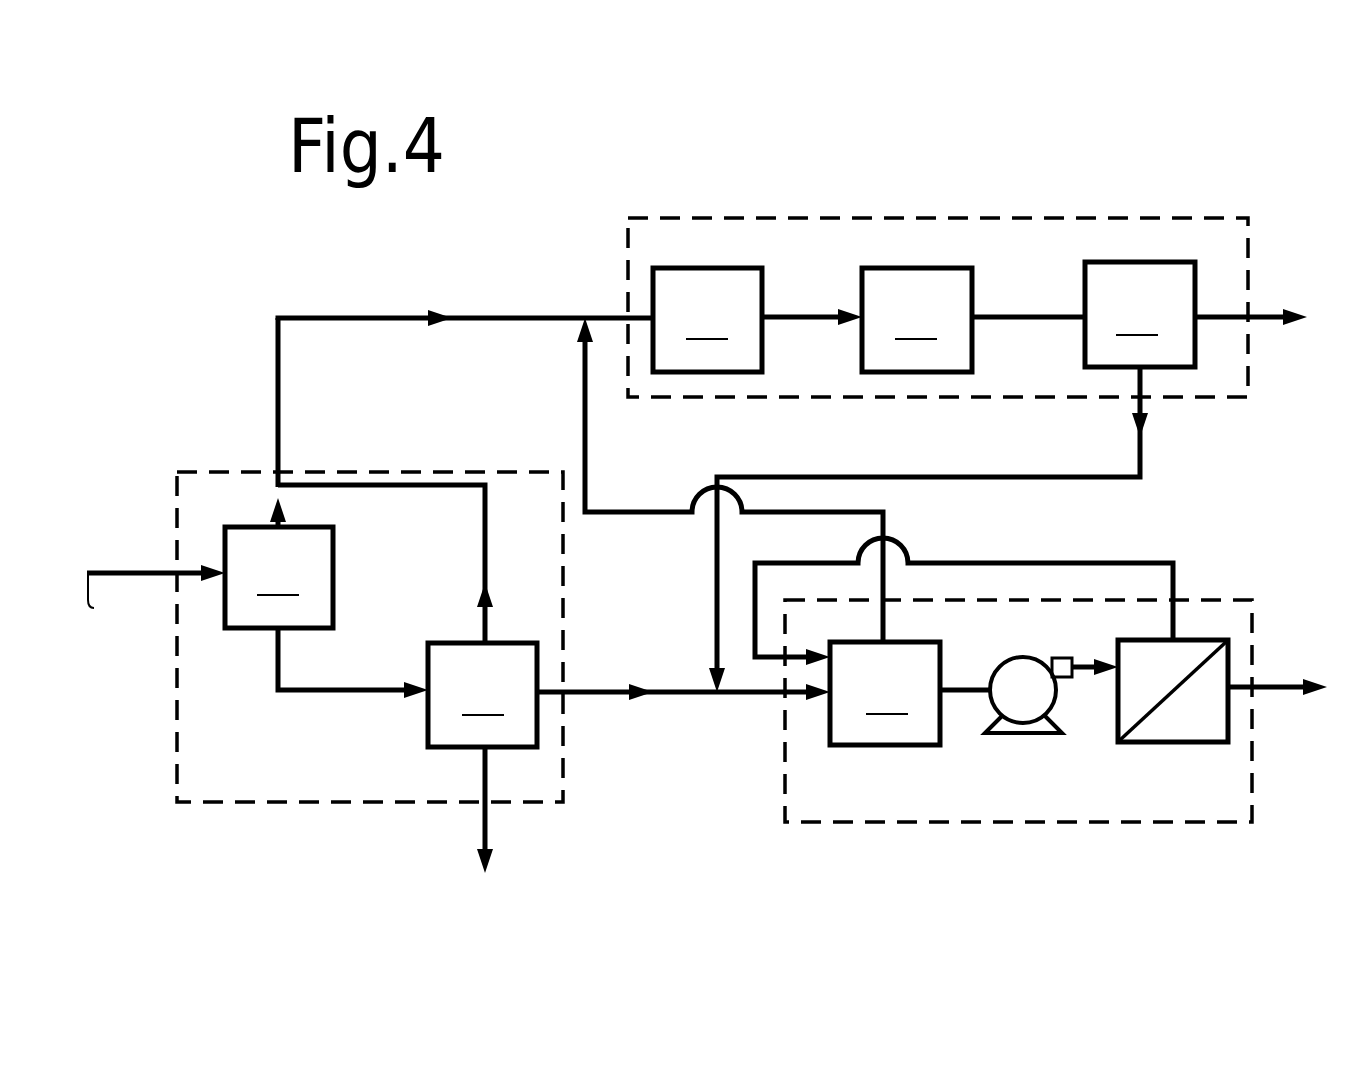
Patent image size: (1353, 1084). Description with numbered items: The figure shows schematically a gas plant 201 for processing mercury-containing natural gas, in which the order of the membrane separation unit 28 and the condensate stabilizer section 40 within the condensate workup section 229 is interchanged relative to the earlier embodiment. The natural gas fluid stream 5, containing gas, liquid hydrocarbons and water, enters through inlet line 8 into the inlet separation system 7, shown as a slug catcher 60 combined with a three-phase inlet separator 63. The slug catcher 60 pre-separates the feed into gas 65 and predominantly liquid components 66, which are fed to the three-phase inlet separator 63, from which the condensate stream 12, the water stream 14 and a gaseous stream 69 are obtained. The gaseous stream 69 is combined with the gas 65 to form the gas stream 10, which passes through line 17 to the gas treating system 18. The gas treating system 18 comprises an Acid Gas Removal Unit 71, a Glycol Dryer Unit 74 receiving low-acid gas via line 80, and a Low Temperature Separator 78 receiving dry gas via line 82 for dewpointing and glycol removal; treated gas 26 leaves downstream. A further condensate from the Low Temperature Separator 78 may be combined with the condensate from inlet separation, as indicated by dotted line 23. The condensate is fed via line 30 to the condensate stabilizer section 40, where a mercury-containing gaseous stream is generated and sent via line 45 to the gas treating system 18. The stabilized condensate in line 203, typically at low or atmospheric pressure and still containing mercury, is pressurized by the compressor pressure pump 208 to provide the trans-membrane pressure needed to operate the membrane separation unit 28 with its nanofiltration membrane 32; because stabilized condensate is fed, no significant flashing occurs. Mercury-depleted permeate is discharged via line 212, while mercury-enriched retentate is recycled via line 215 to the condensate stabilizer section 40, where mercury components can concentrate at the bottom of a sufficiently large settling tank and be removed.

The gas plant 201 is at (305, 275).
The inlet separation system 7 is at (175, 792).
The gas treating system 18 is at (628, 253).
The condensate workup section 229 is at (890, 824).
The slug catcher 60 is at (279, 577).
The three-phase inlet separator 63 is at (482, 695).
The Acid Gas Removal Unit 71 is at (707, 320).
The Glycol Dryer Unit 74 is at (917, 320).
The Low Temperature Separator 78 is at (1140, 314).
The condensate stabilizer section 40 is at (885, 693).
The membrane separation unit 28 is at (1152, 760).
The nanofiltration membrane 32 is at (1180, 683).
The compressor pressure pump 208 is at (1018, 685).
The inlet line 8 is at (148, 571).
The natural gas fluid stream 5 is at (103, 611).
The gas 65 is at (282, 502).
The gaseous stream 69 is at (487, 632).
The gas stream 10 is at (280, 445).
The line 17 is at (278, 345).
The predominantly liquid components 66 is at (274, 690).
The condensate stream 12 is at (600, 695).
The water stream 14 is at (490, 825).
The line 80 is at (800, 315).
The line 82 is at (1035, 315).
The treated gas 26 is at (1262, 320).
The dotted line 23 is at (968, 477).
The line 45 is at (885, 526).
The line 215 is at (1183, 573).
The line 30 is at (735, 698).
The line 203 is at (968, 695).
The line 212 is at (1272, 687).